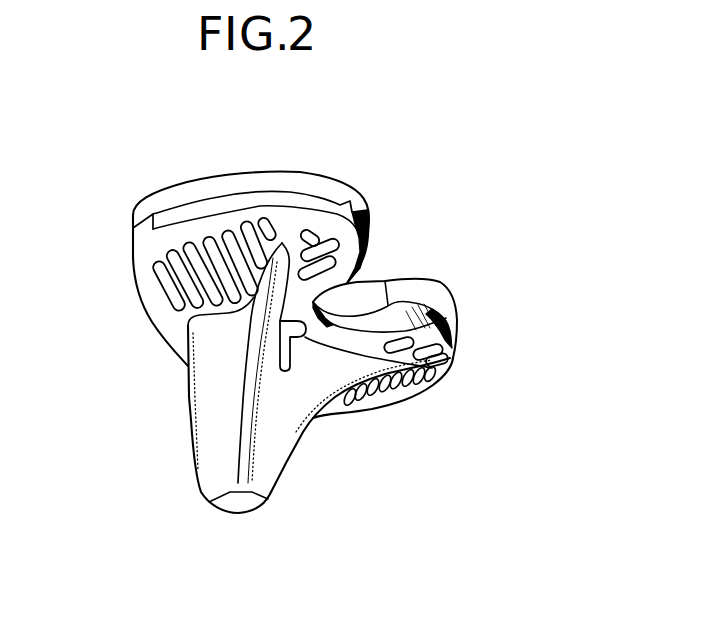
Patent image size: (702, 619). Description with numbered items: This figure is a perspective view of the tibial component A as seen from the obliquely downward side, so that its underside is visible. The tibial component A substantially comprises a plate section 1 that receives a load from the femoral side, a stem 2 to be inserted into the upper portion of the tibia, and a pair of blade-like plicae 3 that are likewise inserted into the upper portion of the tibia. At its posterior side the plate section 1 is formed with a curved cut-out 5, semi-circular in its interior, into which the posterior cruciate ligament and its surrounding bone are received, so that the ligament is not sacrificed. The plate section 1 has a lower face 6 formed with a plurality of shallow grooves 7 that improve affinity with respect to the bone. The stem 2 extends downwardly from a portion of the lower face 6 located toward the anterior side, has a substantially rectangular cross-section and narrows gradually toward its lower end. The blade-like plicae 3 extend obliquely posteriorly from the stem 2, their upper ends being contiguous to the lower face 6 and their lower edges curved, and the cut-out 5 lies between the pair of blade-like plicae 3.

The plate section 1 is at (347, 187).
The stem 2 is at (222, 465).
The blade-like plicae 3 is at (250, 408).
The curved cut-out 5 is at (373, 304).
The lower face 6 is at (146, 310).
The shallow grooves 7 is at (187, 308).
The tibial component A is at (453, 270).